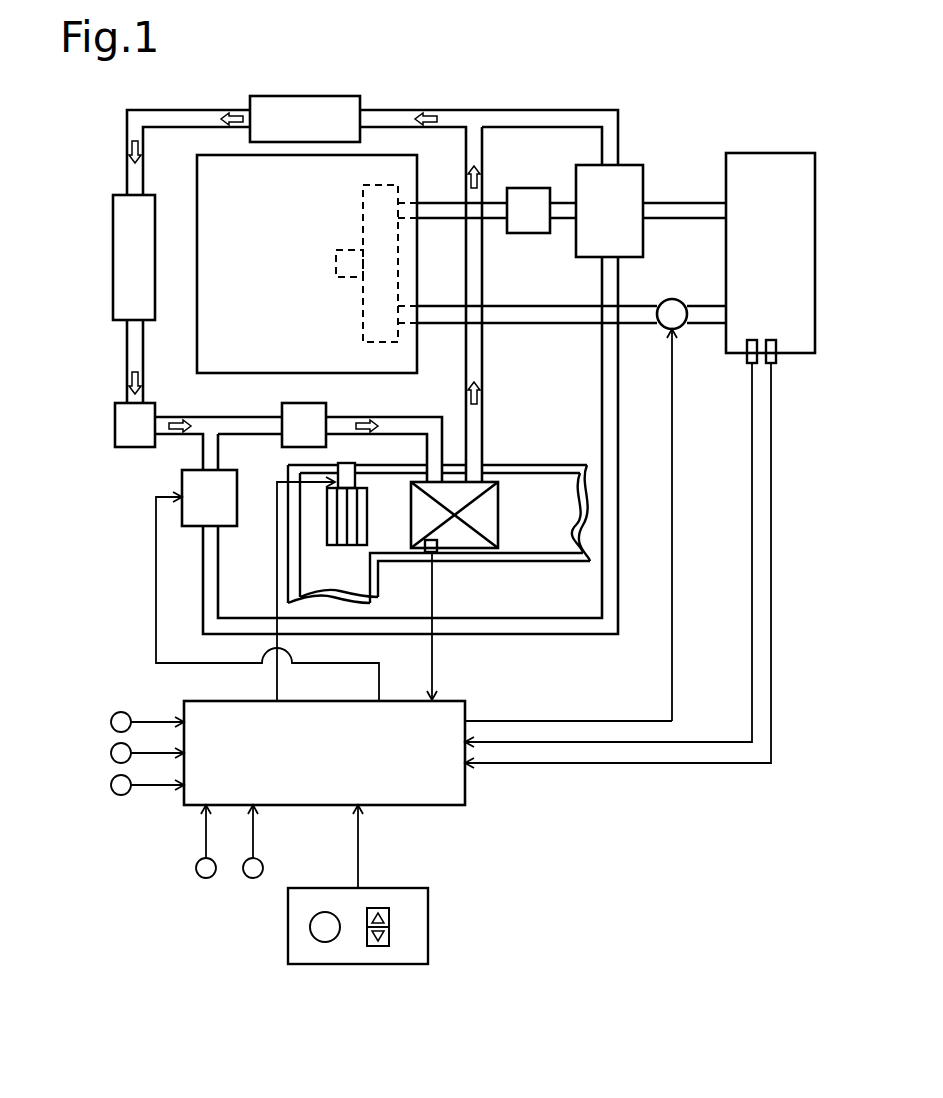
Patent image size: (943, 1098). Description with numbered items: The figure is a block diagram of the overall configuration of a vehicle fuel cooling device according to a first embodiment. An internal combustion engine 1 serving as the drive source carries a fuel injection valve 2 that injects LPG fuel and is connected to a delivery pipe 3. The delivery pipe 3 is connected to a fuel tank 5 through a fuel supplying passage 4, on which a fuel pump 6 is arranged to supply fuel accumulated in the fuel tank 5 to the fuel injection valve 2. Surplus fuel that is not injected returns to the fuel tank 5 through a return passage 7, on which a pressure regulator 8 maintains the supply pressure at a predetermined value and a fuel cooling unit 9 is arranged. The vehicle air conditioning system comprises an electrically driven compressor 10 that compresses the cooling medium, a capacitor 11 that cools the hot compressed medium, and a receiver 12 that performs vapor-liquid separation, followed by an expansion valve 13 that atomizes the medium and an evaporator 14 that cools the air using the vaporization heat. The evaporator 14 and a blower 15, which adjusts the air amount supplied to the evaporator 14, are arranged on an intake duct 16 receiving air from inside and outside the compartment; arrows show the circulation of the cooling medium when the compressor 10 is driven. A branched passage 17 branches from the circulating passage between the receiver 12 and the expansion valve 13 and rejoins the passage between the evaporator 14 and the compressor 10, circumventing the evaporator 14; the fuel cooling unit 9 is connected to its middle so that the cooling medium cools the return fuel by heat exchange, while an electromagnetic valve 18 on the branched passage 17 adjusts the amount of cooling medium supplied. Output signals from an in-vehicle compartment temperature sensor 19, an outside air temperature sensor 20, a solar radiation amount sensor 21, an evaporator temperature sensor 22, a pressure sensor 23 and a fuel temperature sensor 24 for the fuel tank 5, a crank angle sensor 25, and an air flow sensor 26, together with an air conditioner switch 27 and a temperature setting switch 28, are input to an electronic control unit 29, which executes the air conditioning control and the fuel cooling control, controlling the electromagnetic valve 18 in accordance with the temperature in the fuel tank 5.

The internal combustion engine 1 is at (197, 163).
The fuel injection valve 2 is at (336, 261).
The delivery pipe 3 is at (363, 213).
The fuel supplying passage 4 is at (543, 306).
The fuel tank 5 is at (815, 192).
The fuel pump 6 is at (672, 298).
The return passage 7 is at (681, 203).
The pressure regulator 8 is at (528, 187).
The fuel cooling unit 9 is at (634, 165).
The compressor 10 is at (305, 96).
The capacitor 11 is at (113, 257).
The receiver 12 is at (115, 424).
The expansion valve 13 is at (308, 403).
The evaporator 14 is at (498, 528).
The blower 15 is at (367, 500).
The intake duct 16 is at (513, 465).
The branched passage 17 is at (218, 552).
The electromagnetic valve 18 is at (182, 478).
The in-vehicle compartment temperature sensor 19 is at (111, 722).
The outside air temperature sensor 20 is at (111, 753).
The solar radiation amount sensor 21 is at (111, 785).
The evaporator temperature sensor 22 is at (437, 546).
The pressure sensor 23 is at (747, 363).
The fuel temperature sensor 24 is at (776, 363).
The crank angle sensor 25 is at (205, 872).
The air flow sensor 26 is at (253, 872).
The air conditioner switch 27 is at (325, 942).
The temperature setting switch 28 is at (378, 946).
The electronic control unit 29 is at (428, 805).